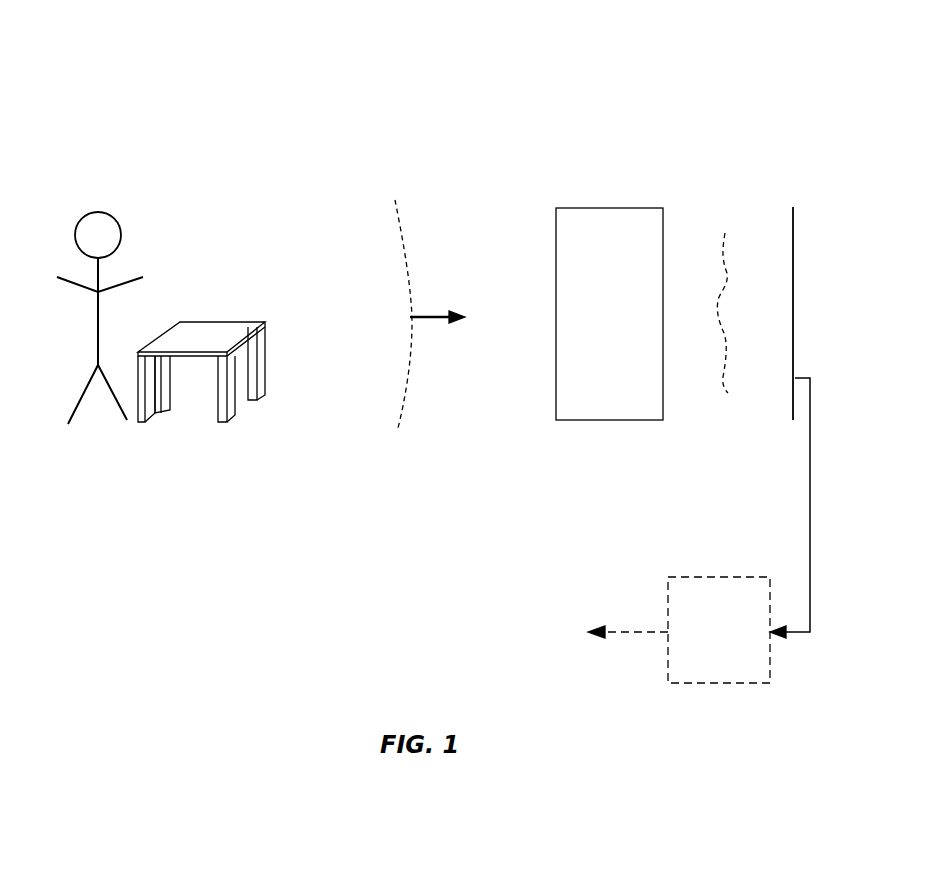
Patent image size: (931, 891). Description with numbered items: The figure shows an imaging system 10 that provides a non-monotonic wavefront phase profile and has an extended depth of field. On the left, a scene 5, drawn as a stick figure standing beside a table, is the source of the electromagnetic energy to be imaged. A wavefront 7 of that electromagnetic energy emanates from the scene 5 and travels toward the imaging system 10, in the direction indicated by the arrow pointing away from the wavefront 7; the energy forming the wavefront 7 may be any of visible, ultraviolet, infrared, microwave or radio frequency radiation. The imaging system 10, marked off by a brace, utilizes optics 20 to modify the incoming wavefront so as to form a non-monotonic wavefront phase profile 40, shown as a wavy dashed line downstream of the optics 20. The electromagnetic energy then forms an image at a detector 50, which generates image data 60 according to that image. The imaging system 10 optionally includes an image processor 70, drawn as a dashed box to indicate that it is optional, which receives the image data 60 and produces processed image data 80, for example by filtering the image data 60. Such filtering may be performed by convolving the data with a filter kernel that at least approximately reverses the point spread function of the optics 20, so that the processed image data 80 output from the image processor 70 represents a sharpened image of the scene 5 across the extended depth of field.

The scene 5 is at (152, 134).
The wavefront 7 is at (400, 215).
The imaging system 10 is at (807, 182).
The optics 20 is at (621, 326).
The non-monotonic wavefront phase profile 40 is at (723, 380).
The detector 50 is at (792, 400).
The image data 60 is at (810, 517).
The image processor 70 is at (731, 646).
The processed image data 80 is at (632, 632).